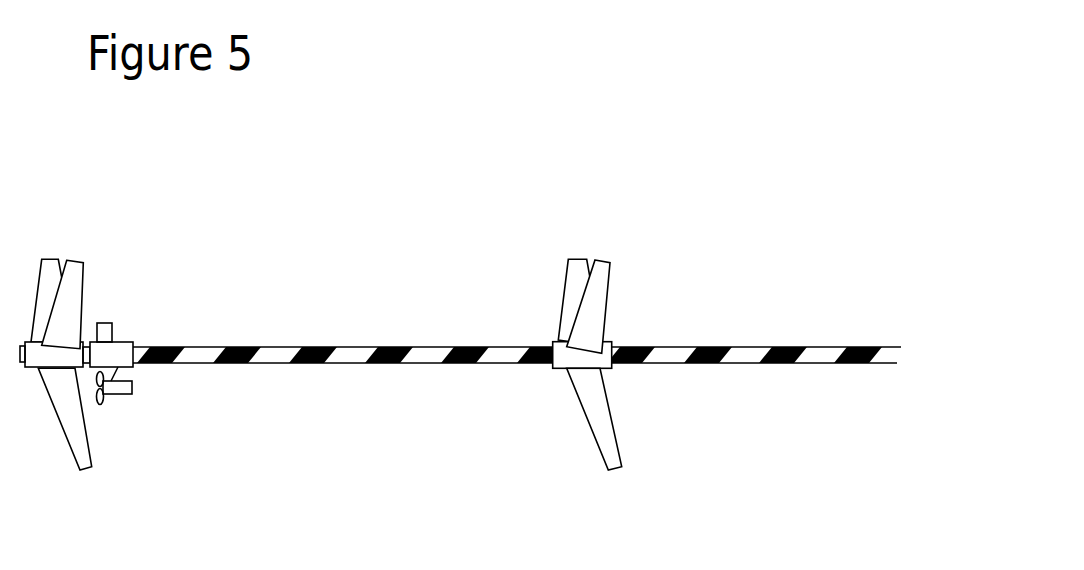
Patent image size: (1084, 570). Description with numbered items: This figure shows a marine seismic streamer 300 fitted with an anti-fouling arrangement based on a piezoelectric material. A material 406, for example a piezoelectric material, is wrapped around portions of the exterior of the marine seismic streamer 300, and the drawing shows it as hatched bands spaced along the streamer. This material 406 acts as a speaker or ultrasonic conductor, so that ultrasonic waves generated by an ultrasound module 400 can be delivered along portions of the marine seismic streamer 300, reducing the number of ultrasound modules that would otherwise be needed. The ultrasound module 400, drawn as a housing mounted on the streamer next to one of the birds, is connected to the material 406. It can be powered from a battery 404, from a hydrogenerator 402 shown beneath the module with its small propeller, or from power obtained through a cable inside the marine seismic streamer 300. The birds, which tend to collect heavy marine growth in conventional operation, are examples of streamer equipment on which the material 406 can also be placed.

The marine seismic streamer 300 is at (360, 347).
The ultrasound module 400 is at (123, 342).
The hydrogenerator 402 is at (125, 394).
The battery 404 is at (102, 323).
The material 406 is at (302, 363).